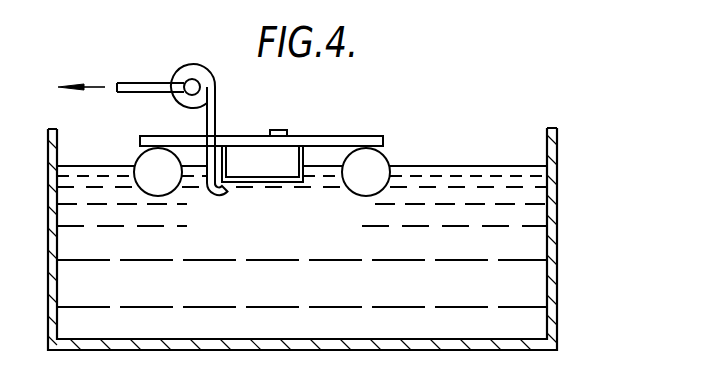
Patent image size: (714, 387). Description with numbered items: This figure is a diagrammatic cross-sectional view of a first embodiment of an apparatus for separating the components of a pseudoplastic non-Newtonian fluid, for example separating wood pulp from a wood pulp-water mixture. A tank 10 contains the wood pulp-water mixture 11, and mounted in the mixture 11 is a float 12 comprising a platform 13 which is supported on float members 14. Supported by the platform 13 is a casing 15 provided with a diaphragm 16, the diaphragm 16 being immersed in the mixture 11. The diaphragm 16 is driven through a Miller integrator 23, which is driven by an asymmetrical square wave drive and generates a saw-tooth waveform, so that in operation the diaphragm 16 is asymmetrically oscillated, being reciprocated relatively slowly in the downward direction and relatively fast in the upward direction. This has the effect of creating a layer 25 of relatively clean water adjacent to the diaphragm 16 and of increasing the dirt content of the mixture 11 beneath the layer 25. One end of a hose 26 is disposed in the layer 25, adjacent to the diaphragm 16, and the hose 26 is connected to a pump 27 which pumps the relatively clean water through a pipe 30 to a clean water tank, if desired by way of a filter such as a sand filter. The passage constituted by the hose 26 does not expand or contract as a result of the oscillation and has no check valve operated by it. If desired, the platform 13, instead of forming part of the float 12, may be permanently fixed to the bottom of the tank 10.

The tank 10 is at (507, 127).
The wood pulp-water mixture 11 is at (523, 218).
The float 12 is at (266, 163).
The platform 13 is at (331, 136).
The float members 14 is at (150, 170).
The casing 15 is at (303, 172).
The diaphragm 16 is at (272, 182).
The Miller integrator 23 is at (282, 129).
The layer 25 is at (240, 190).
The hose 26 is at (231, 164).
The pump 27 is at (178, 74).
The pipe 30 is at (122, 82).